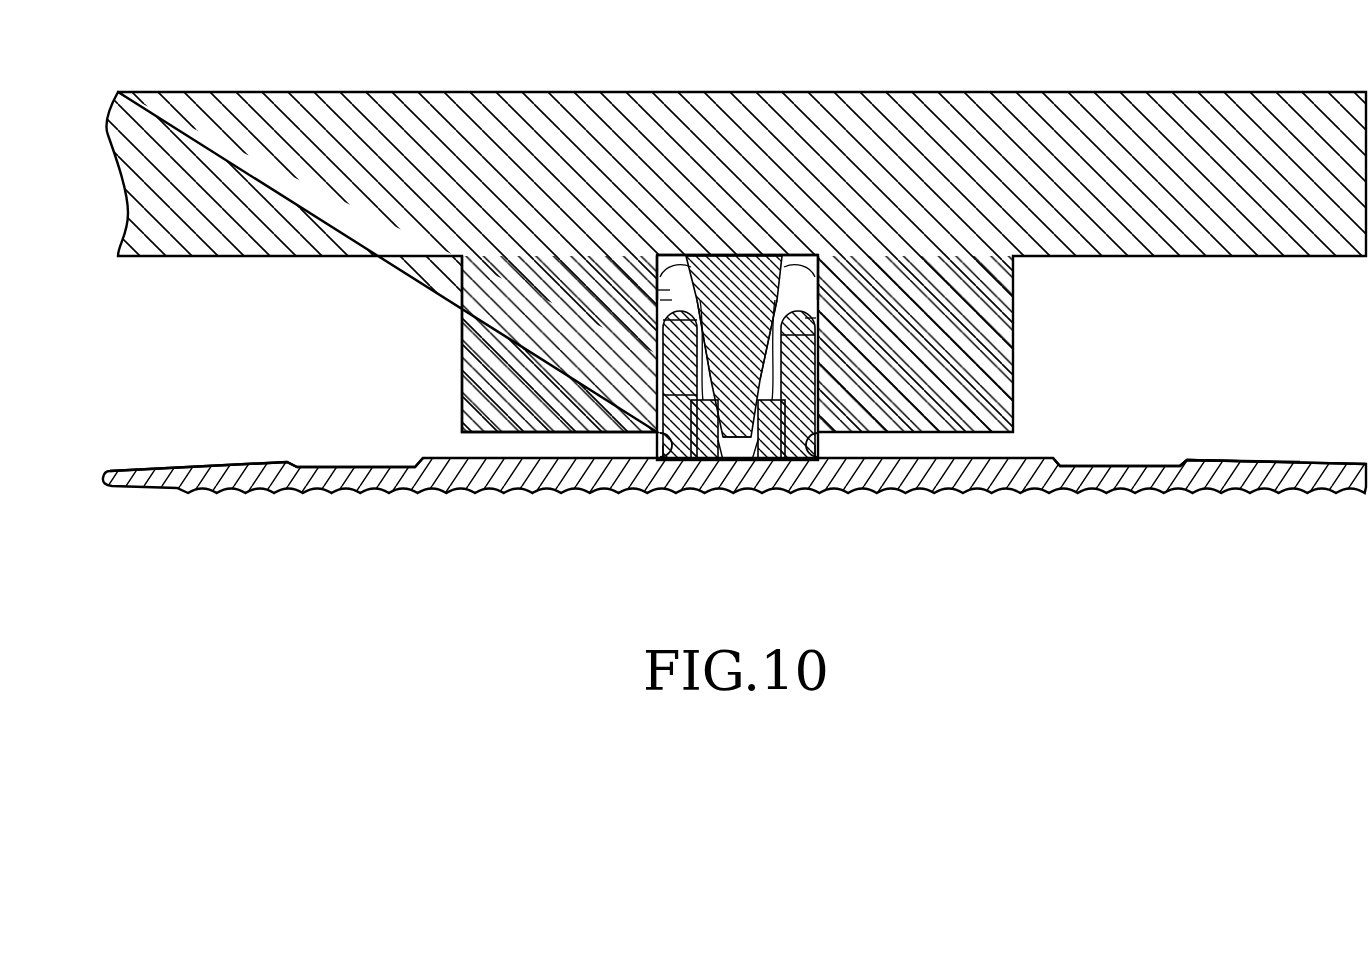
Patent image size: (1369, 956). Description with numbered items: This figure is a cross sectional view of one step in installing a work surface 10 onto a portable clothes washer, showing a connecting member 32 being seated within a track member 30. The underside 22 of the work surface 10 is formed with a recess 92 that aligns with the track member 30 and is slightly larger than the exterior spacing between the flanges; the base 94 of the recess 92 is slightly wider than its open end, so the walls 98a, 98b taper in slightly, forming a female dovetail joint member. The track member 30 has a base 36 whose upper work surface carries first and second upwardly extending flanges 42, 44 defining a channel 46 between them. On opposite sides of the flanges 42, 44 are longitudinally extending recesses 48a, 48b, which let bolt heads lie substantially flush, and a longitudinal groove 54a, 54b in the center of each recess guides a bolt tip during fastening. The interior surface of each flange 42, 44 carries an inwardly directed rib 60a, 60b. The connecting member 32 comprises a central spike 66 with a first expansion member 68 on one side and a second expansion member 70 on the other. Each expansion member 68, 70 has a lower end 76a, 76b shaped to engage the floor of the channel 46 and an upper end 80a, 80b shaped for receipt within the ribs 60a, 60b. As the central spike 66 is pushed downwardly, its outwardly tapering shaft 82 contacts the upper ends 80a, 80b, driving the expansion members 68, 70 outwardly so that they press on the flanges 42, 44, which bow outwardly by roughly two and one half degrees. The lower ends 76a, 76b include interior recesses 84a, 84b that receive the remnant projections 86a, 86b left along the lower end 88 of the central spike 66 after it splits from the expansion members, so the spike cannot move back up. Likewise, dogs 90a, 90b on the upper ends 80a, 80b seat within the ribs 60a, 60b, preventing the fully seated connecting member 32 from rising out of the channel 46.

The work surface 10 is at (192, 257).
The underside 22 is at (458, 445).
The track member 30 is at (200, 460).
The connecting member 32 is at (757, 270).
The base 36 is at (1273, 462).
The first upwardly extending flange 42 is at (660, 370).
The second upwardly extending flange 44 is at (815, 385).
The channel 46 is at (728, 480).
The longitudinally extending recess 48a is at (295, 460).
The longitudinally extending recess 48b is at (1175, 460).
The longitudinal groove 54a is at (357, 460).
The longitudinal groove 54b is at (1118, 465).
The inwardly directed rib 60a is at (690, 340).
The inwardly directed rib 60b is at (812, 348).
The central spike 66 is at (690, 270).
The first expansion member 68 is at (640, 478).
The second expansion member 70 is at (812, 478).
The lower end 76a is at (665, 462).
The lower end 76b is at (802, 465).
The upper end 80a is at (735, 282).
The upper end 80b is at (745, 290).
The outwardly tapering shaft 82 is at (765, 270).
The interior recess 84a is at (705, 462).
The interior recess 84b is at (775, 462).
The remnant projection 86a is at (728, 462).
The remnant projection 86b is at (750, 462).
The lower end 88 is at (700, 396).
The dog 90a is at (662, 320).
The dog 90b is at (815, 335).
The recess 92 is at (668, 290).
The base 94 is at (687, 256).
The wall 98a is at (672, 300).
The wall 98b is at (812, 318).